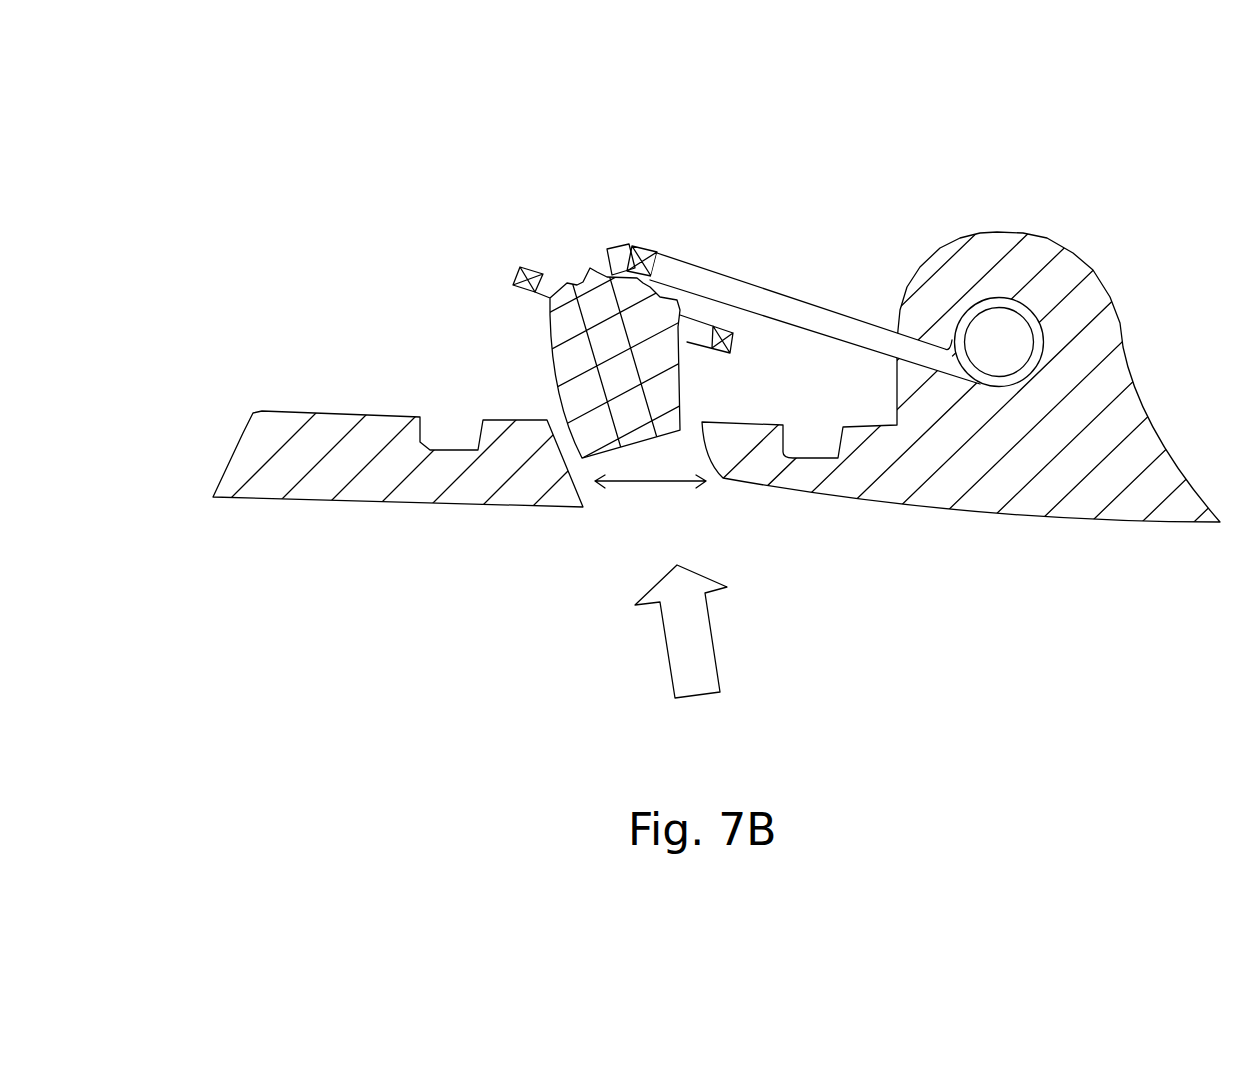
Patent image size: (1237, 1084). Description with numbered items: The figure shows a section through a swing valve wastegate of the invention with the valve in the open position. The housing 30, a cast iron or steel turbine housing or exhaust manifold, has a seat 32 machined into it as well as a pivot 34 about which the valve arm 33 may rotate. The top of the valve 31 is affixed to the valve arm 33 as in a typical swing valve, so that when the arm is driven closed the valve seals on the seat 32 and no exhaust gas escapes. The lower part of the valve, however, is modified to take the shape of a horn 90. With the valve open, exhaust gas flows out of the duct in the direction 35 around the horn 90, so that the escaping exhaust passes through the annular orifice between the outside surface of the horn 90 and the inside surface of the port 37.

The housing 30 is at (1004, 258).
The valve 31 is at (513, 281).
The seat 32 is at (507, 440).
The valve arm 33 is at (783, 297).
The pivot 34 is at (1010, 330).
The exhaust gas flow direction 35 is at (712, 637).
The port 37 is at (658, 481).
The horn 90 is at (655, 405).